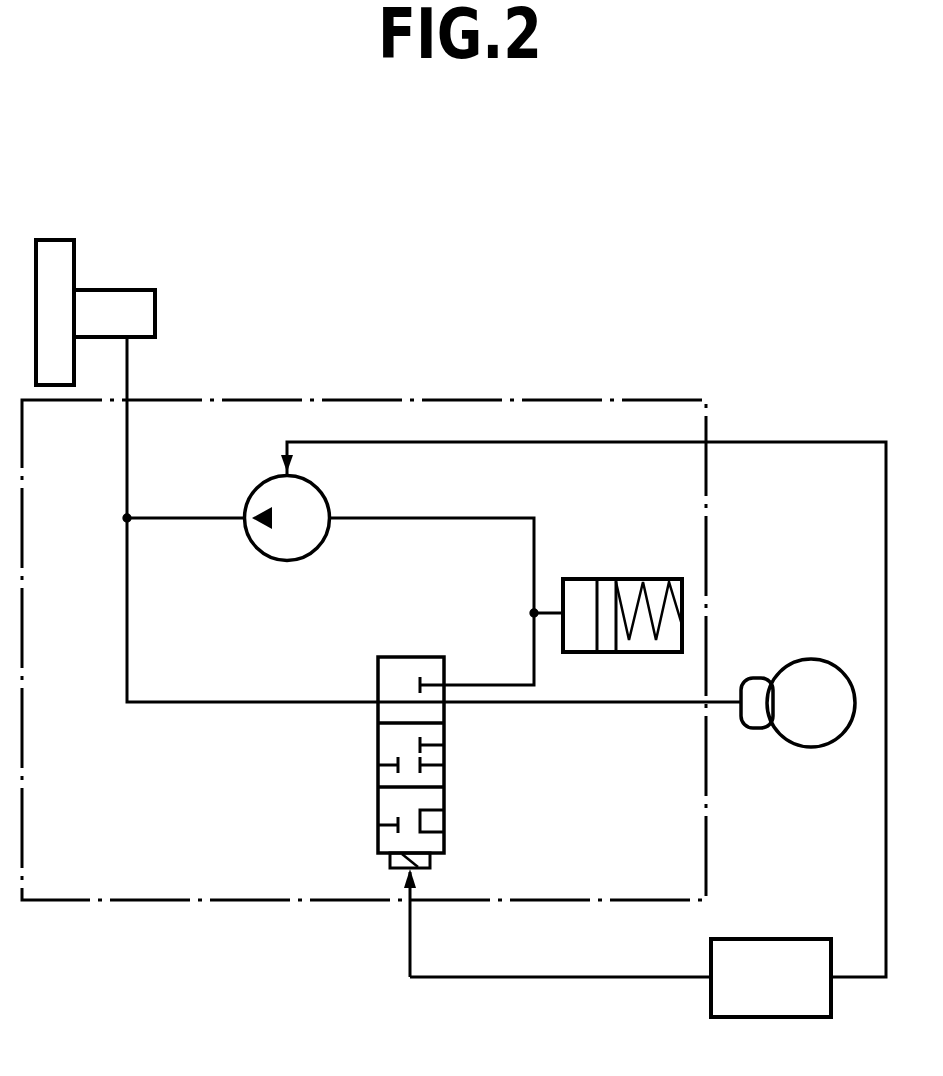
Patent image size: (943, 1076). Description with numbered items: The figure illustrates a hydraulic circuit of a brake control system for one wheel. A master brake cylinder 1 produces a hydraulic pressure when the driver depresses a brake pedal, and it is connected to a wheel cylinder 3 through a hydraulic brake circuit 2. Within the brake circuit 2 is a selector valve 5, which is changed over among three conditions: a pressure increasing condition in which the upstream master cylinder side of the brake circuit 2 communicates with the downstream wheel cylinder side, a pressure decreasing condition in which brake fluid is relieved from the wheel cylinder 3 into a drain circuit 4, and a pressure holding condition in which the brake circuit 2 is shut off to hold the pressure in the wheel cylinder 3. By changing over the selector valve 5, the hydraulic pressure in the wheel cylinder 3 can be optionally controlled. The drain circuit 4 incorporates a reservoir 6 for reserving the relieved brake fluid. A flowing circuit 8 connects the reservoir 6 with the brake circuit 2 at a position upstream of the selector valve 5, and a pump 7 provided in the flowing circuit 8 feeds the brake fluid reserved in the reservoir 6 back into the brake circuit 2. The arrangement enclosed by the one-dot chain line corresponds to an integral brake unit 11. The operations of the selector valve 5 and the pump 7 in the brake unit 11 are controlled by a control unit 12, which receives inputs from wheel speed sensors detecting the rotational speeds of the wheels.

The master brake cylinder 1 is at (118, 290).
The hydraulic brake circuit 2 is at (130, 385).
The wheel cylinder 3 is at (750, 678).
The drain circuit 4 is at (532, 645).
The selector valve 5 is at (378, 738).
The reservoir 6 is at (630, 579).
The pump 7 is at (262, 555).
The flowing circuit 8 is at (180, 518).
The brake unit 11 is at (620, 400).
The control unit 12 is at (785, 939).